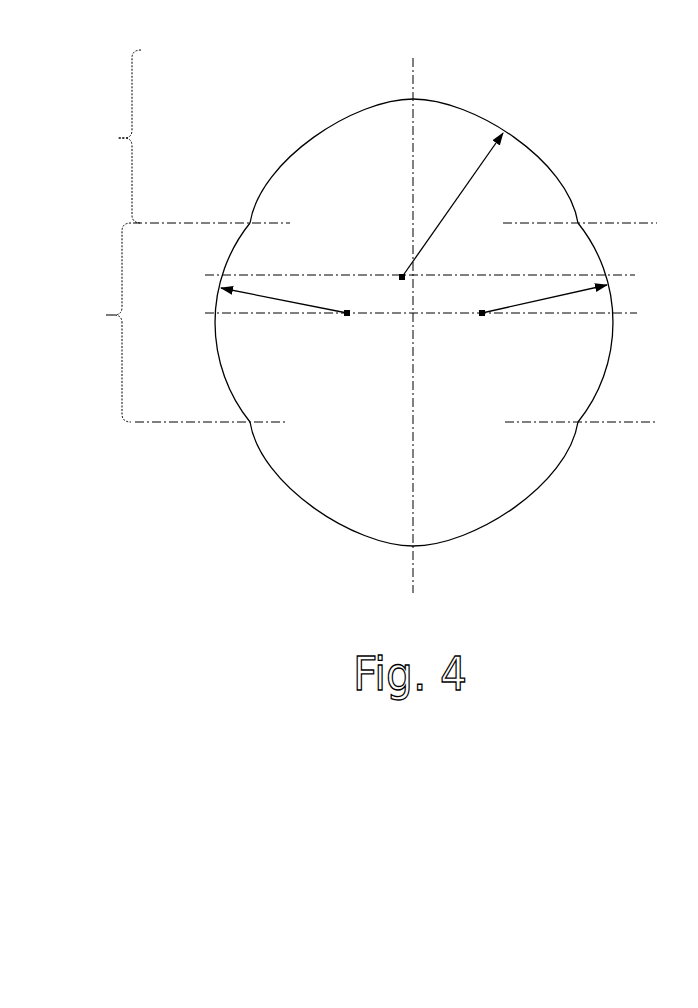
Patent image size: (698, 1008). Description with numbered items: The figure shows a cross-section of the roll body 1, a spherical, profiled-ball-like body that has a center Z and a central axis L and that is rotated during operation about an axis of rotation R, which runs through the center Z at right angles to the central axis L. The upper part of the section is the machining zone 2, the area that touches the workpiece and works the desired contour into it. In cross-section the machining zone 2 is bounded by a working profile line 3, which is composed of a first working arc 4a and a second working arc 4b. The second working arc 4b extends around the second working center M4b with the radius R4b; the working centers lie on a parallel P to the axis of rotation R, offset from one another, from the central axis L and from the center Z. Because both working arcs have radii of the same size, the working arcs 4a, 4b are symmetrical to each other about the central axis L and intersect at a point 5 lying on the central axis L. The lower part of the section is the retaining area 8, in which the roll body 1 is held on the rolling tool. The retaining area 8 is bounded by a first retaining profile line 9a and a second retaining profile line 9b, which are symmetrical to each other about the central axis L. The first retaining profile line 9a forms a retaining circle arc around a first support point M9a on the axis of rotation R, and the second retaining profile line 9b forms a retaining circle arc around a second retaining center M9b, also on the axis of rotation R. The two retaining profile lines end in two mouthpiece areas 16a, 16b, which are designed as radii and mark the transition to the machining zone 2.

The roll body 1 is at (387, 324).
The machining zone 2 is at (342, 154).
The working profile line 3 is at (319, 137).
The first working arc 4a is at (286, 158).
The second working arc 4b is at (529, 147).
The point 5 is at (420, 94).
The retaining area 8 is at (387, 322).
The first retaining profile line 9a is at (214, 299).
The second retaining profile line 9b is at (612, 370).
The mouthpiece area 16a is at (249, 221).
The mouthpiece area 16b is at (579, 221).
The second working center M4b is at (381, 263).
The radius of the second working arc R4b is at (452, 205).
The first support point M9a is at (305, 321).
The second retaining center M9b is at (521, 320).
The center Z is at (419, 275).
The axis of rotation R is at (408, 316).
The parallel P is at (430, 278).
The central axis L is at (416, 339).